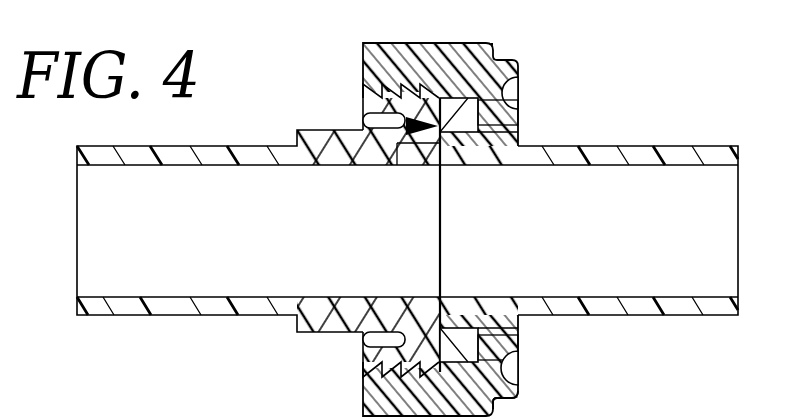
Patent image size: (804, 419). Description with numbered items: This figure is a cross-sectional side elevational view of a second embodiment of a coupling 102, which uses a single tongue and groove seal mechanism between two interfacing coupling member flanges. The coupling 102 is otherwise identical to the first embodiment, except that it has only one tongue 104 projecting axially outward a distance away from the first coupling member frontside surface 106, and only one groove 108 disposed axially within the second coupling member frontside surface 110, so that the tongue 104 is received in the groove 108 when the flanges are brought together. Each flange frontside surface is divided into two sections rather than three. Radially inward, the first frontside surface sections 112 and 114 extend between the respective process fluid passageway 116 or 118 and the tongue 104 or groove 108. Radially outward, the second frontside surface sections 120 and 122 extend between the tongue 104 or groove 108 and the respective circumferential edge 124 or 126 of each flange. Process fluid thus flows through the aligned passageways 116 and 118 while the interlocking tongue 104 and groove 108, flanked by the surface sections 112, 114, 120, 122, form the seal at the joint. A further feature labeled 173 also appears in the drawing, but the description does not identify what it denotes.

The coupling 102 is at (330, 101).
The tongue 104 is at (397, 165).
The first coupling member frontside surface 106 is at (330, 163).
The groove 108 is at (462, 317).
The second coupling member frontside surface 110 is at (470, 350).
The first frontside surface section 112 is at (410, 166).
The first frontside surface section 114 is at (457, 298).
The process fluid passageway 116 is at (187, 166).
The process fluid passageway 118 is at (547, 166).
The second frontside surface section 120 is at (418, 105).
The second frontside surface section 122 is at (503, 358).
The circumferential edge 124 is at (492, 62).
The circumferential edge 126 is at (398, 386).
The nut body 173 is at (542, 405).